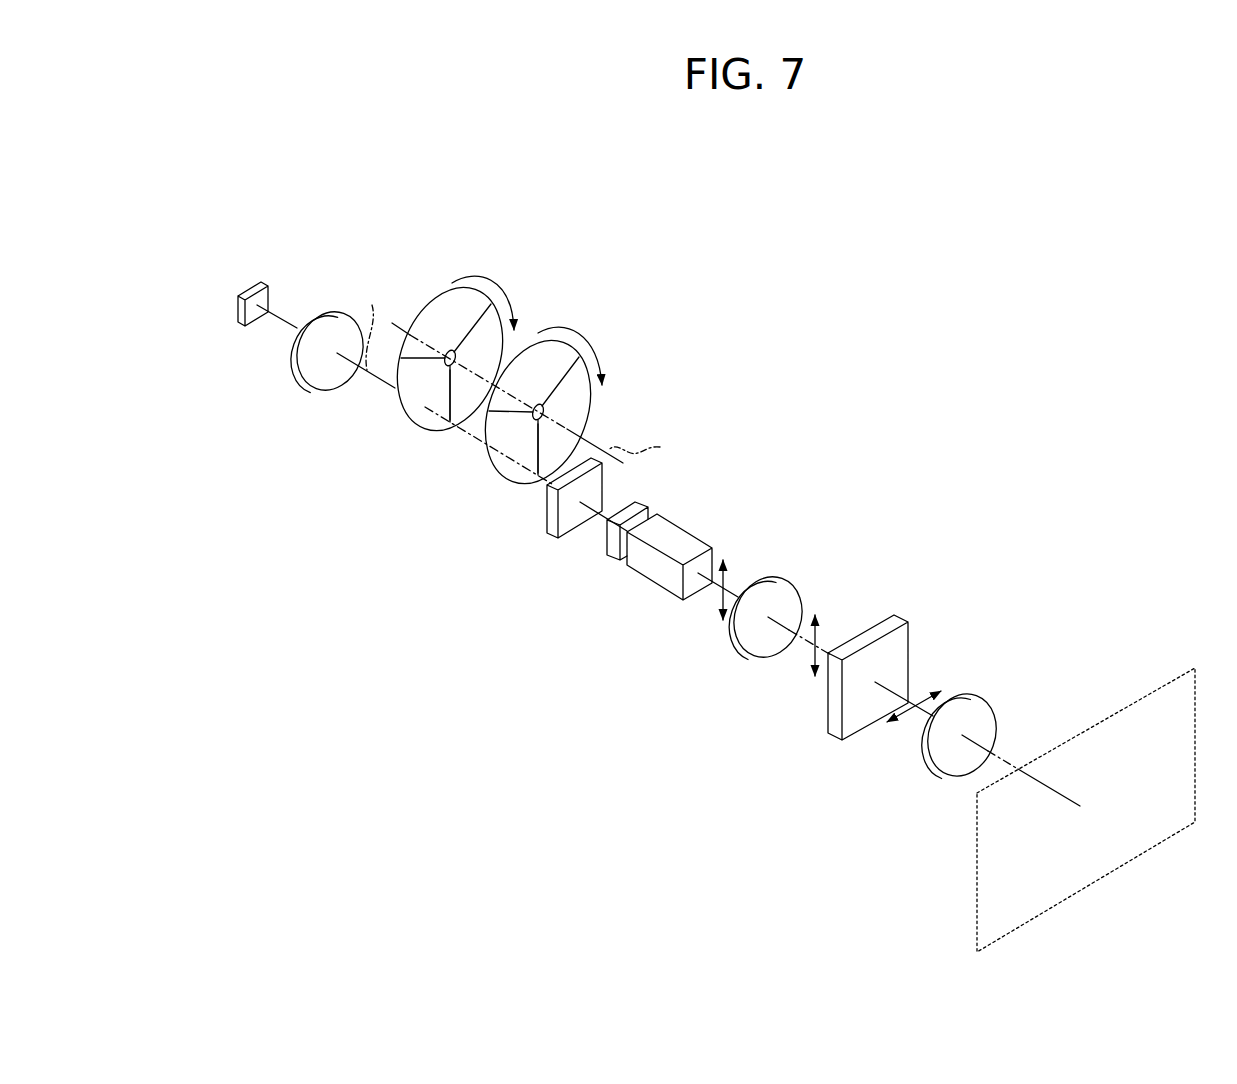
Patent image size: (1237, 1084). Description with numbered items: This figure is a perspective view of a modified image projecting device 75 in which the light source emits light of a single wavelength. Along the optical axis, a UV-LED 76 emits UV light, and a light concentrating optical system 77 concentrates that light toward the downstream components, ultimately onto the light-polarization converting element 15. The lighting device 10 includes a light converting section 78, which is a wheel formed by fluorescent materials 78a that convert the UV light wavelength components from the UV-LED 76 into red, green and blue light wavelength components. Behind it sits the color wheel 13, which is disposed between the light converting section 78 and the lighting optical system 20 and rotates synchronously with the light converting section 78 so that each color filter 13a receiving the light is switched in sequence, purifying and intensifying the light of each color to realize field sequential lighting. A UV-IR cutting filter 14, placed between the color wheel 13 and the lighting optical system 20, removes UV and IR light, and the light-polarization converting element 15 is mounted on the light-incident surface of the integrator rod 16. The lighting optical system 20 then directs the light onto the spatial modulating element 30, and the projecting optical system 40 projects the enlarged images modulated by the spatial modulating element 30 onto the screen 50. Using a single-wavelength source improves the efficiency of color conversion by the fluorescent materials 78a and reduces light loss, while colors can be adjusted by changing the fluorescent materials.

The lighting device 10 is at (619, 221).
The color wheel 13 is at (588, 426).
The color filter 13a is at (537, 336).
The UV-IR cutting filter 14 is at (552, 537).
The light-polarization converting element 15 is at (608, 558).
The integrator rod 16 is at (672, 597).
The lighting optical system 20 is at (798, 572).
The spatial modulating element 30 is at (912, 619).
The projecting optical system 40 is at (992, 691).
The screen 50 is at (975, 857).
The image projecting device 75 is at (1054, 411).
The UV-LED 76 is at (237, 312).
The light concentrating optical system 77 is at (296, 362).
The light converting section 78 is at (402, 398).
The fluorescent material 78a is at (436, 312).